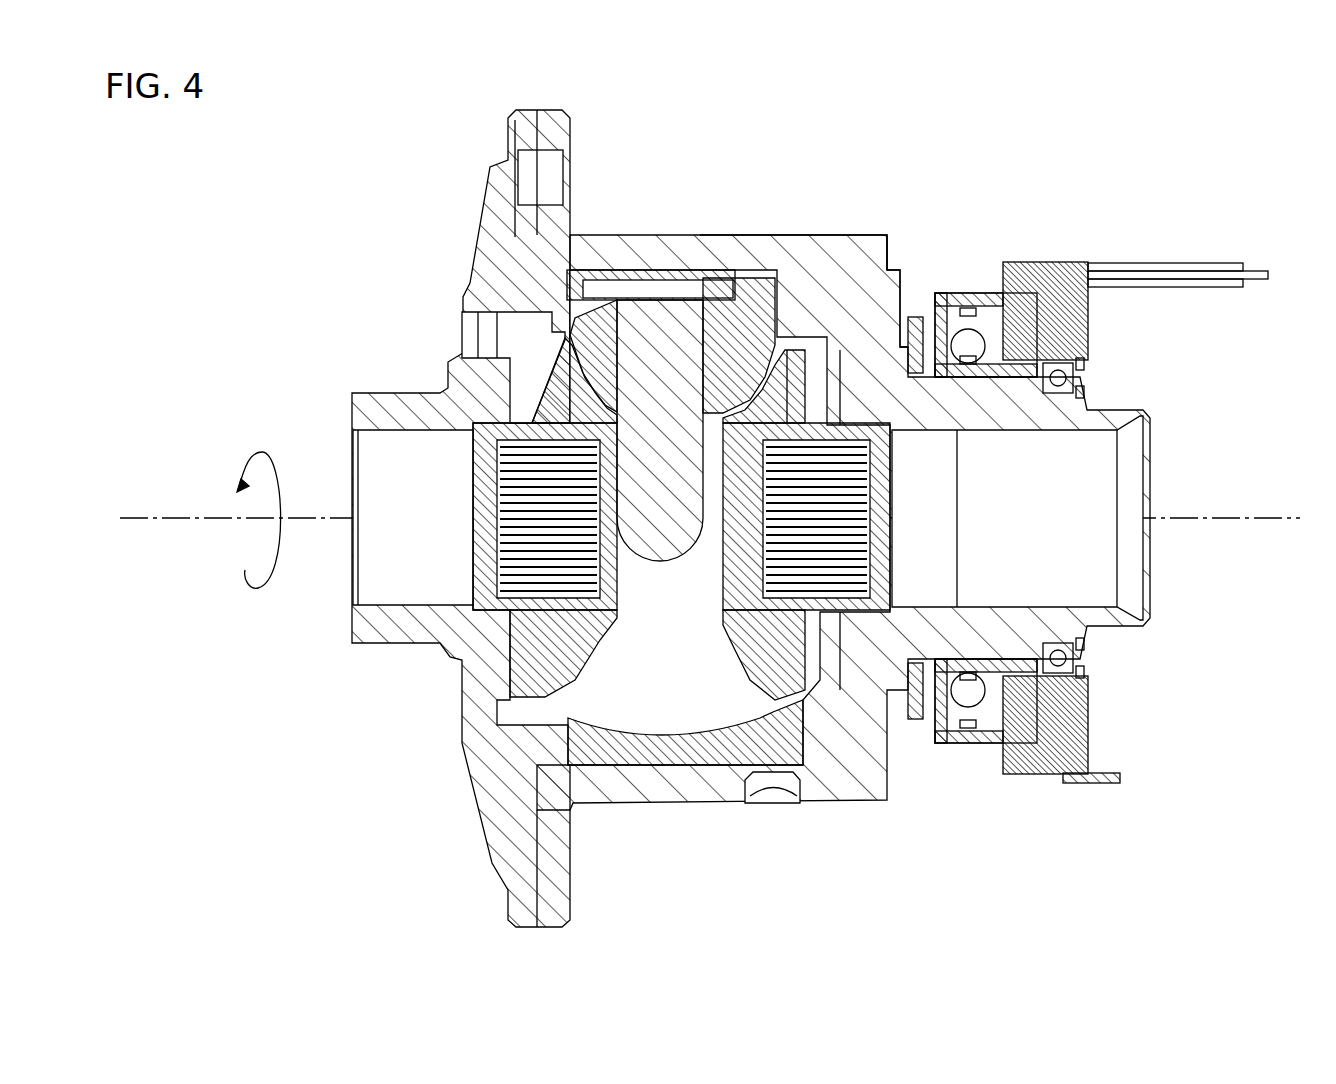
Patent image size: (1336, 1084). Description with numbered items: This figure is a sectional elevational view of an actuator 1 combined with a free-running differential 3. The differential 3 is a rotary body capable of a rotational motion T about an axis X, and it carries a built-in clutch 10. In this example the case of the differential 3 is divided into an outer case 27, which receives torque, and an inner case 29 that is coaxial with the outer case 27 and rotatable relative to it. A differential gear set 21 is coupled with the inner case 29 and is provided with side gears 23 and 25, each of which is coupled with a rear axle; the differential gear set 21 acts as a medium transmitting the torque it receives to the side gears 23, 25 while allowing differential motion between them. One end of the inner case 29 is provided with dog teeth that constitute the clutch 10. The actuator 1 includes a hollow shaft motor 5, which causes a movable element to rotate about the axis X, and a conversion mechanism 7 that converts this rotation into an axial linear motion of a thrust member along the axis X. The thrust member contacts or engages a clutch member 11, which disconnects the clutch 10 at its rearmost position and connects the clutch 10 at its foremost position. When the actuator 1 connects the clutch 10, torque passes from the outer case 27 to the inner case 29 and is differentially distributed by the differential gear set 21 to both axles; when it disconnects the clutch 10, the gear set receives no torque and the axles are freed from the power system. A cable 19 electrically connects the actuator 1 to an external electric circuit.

The actuator 1 is at (1067, 153).
The differential 3 is at (655, 170).
The hollow shaft motor 5 is at (1053, 240).
The conversion mechanism 7 is at (968, 244).
The clutch 10 is at (771, 802).
The clutch member 11 is at (906, 237).
The cable 19 is at (1203, 244).
The differential gear set 21 is at (663, 680).
The side gear 23 is at (727, 665).
The side gear 25 is at (588, 662).
The outer case 27 is at (818, 237).
The inner case 29 is at (757, 237).
The axis X is at (165, 516).
The rotational motion T is at (255, 452).